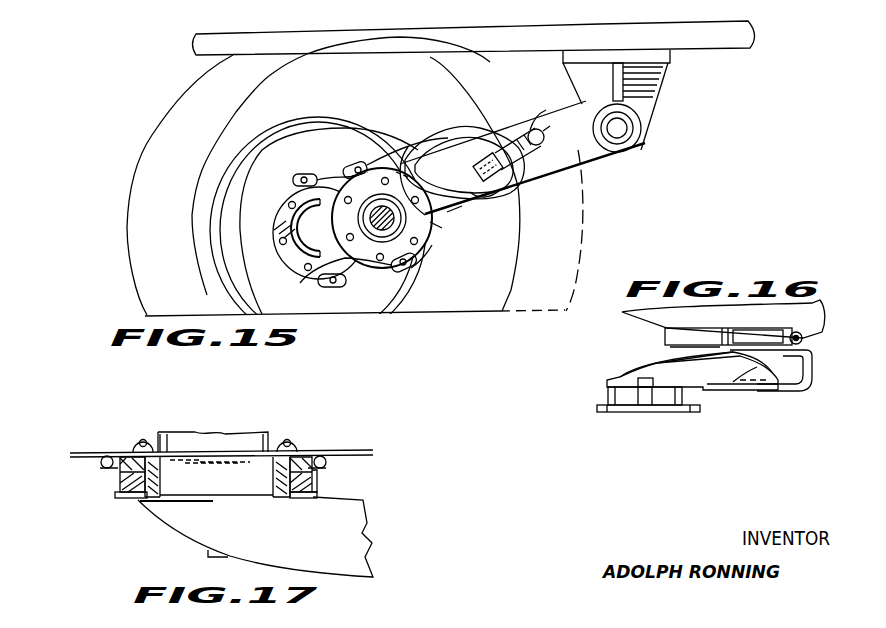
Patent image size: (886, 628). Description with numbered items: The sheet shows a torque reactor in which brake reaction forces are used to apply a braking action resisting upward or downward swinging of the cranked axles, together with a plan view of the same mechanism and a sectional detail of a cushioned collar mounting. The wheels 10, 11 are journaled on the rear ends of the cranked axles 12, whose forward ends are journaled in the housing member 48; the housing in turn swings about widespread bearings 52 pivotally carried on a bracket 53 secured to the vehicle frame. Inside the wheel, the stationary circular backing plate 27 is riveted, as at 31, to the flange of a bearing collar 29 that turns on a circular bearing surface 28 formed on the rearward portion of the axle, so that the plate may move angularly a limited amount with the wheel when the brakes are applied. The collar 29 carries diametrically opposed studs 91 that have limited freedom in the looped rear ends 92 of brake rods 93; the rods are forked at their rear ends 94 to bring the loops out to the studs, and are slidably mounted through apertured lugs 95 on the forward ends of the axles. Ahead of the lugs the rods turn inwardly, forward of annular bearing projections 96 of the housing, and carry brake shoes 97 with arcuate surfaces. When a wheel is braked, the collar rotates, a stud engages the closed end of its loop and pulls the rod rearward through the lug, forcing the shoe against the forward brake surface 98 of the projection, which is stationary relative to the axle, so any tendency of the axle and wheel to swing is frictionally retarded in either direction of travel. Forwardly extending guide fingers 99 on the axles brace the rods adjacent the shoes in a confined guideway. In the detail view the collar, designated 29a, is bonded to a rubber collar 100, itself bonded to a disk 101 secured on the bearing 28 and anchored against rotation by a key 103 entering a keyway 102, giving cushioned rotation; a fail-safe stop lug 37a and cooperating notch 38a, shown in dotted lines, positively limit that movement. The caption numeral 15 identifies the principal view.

In FIG. 15, the wheel 10 is at (500, 312).
In FIG. 15, the wheel 11 is at (580, 250).
In FIG. 15, the cranked axle 12 is at (439, 151).
In FIG. 16, the cranked axle 12 is at (615, 380).
In FIG. 17, the cranked axle 12 is at (360, 537).
In FIG. 15, the wheel assembly 15 is at (347, 147).
In FIG. 15, the backing plate 27 is at (237, 250).
In FIG. 17, the backing plate 27 is at (345, 453).
In FIG. 17, the bearing surface 28 is at (233, 486).
In FIG. 15, the bearing collar 29 is at (275, 255).
In FIG. 16, the bearing collar 29 is at (599, 411).
In FIG. 17, the bearing collar 29a is at (300, 458).
In FIG. 15, the rivets 31 is at (276, 217).
In FIG. 17, the stop lug 37a is at (223, 450).
In FIG. 17, the notch 38a is at (185, 448).
In FIG. 15, the housing member 48 is at (588, 166).
In FIG. 16, the housing member 48 is at (635, 318).
In FIG. 15, the bearings 52 is at (643, 125).
In FIG. 15, the bracket 53 is at (652, 93).
In FIG. 15, the studs 91 is at (294, 180).
In FIG. 16, the studs 91 is at (634, 406).
In FIG. 15, the looped rear ends 92 is at (348, 162).
In FIG. 16, the looped rear ends 92 is at (640, 363).
In FIG. 15, the brake rods 93 is at (458, 206).
In FIG. 16, the brake rods 93 is at (713, 397).
In FIG. 15, the forked rear ends 94 is at (439, 230).
In FIG. 15, the apertured lugs 95 is at (491, 199).
In FIG. 16, the apertured lugs 95 is at (779, 391).
In FIG. 16, the annular bearing projections 96 is at (757, 322).
In FIG. 15, the brake shoes 97 is at (536, 161).
In FIG. 16, the brake shoes 97 is at (815, 306).
In FIG. 15, the brake surface 98 is at (526, 190).
In FIG. 15, the guide fingers 99 is at (545, 118).
In FIG. 17, the rubber collar 100 is at (313, 483).
In FIG. 17, the disk 101 is at (310, 498).
In FIG. 17, the keyway 102 is at (142, 458).
In FIG. 17, the key 103 is at (138, 498).